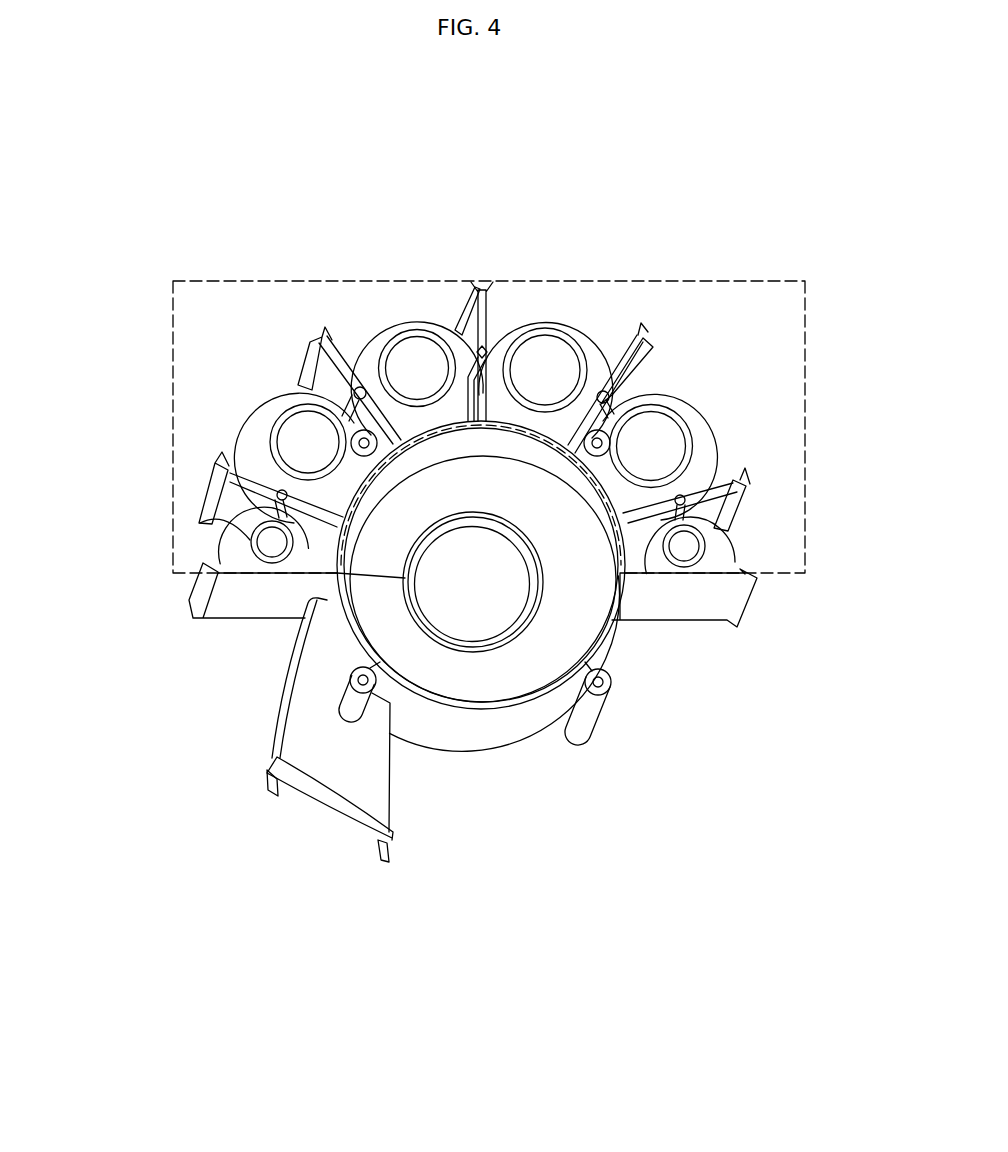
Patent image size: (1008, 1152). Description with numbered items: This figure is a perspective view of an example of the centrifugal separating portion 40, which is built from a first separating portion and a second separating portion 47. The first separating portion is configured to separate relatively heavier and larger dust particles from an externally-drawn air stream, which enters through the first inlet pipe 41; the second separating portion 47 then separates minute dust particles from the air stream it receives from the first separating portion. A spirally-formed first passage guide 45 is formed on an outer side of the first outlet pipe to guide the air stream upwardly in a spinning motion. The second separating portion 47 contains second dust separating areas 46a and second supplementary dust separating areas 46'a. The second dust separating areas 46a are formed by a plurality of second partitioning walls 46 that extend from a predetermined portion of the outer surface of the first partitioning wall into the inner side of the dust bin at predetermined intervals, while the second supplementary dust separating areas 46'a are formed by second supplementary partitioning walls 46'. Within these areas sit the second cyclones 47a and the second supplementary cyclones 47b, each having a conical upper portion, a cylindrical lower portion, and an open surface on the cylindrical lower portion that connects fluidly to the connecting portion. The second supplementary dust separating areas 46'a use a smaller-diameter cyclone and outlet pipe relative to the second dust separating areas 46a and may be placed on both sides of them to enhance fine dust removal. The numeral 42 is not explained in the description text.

The centrifugal separating portion 40 is at (80, 103).
The first inlet pipe 41 is at (318, 818).
The support arm 42 is at (367, 778).
The first passage guide 45 is at (382, 608).
The second partitioning walls 46 is at (500, 364).
The second dust separating areas 46a is at (293, 372).
The second supplementary partitioning walls 46' is at (469, 540).
The second supplementary dust separating areas 46'a is at (462, 490).
The second separating portion 47 is at (805, 573).
The second cyclones 47a is at (412, 333).
The second supplementary cyclones 47b is at (237, 530).